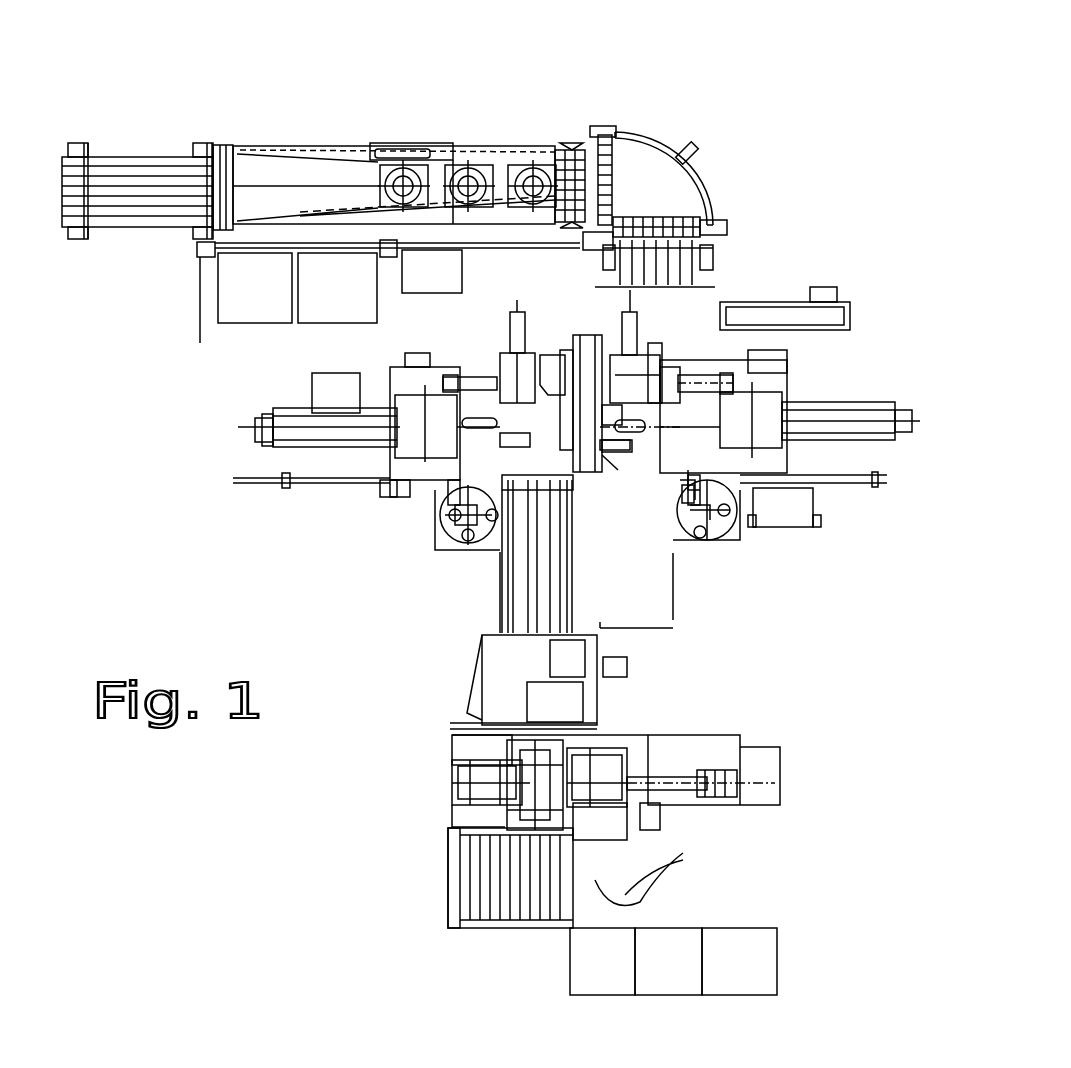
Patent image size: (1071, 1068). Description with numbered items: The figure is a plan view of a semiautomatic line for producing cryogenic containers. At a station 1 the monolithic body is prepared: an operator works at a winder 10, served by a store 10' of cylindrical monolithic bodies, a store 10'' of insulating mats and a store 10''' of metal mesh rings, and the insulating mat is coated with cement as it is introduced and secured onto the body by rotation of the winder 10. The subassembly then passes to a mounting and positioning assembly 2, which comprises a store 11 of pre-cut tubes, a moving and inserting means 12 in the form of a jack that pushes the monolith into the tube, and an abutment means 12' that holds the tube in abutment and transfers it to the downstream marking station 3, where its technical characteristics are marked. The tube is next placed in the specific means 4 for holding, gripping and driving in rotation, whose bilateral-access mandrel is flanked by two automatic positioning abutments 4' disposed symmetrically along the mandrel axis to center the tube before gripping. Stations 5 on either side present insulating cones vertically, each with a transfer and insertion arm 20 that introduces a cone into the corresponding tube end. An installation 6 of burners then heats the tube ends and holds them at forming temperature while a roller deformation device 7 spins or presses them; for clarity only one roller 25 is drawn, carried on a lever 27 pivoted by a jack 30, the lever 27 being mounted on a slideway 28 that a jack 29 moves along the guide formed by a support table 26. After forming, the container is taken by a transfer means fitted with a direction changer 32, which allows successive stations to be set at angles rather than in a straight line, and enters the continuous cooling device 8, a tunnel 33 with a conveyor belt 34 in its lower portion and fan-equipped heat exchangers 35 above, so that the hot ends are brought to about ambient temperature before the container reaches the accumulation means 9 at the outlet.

The station 1 is at (707, 872).
The mounting and positioning assembly 2 is at (432, 817).
The marking station 3 is at (503, 680).
The means for holding, gripping and driving in rotation 4 is at (553, 477).
The automatic positioning abutments 4' is at (541, 389).
The stations for the distribution and emplacement of insulating cones 5 is at (458, 540).
The installation for heating and holding at temperature 6 is at (490, 422).
The roller deformation device 7 is at (683, 367).
The continuous cooling device 8 is at (440, 134).
The accumulation means 9 is at (143, 210).
The winder 10 is at (635, 738).
The store of monolithic bodies 10' is at (668, 961).
The store of insulating mats 10'' is at (602, 961).
The store of metal mesh rings 10''' is at (739, 961).
The store of pre-cut tubes 11 is at (480, 893).
The means for moving and inserting the monolith 12 is at (701, 716).
The means for holding in abutment 12' is at (418, 782).
The transfer and insertion arm 20 is at (688, 487).
The roller 25 is at (722, 377).
The support table 26 is at (697, 372).
The lever 27 is at (670, 355).
The slideway 28 is at (652, 350).
The jack 29 is at (825, 290).
The jack 30 is at (638, 358).
The direction changer 32 is at (633, 155).
The tunnel 33 is at (352, 146).
The conveyor belt 34 is at (567, 140).
The heat exchangers 35 is at (528, 205).